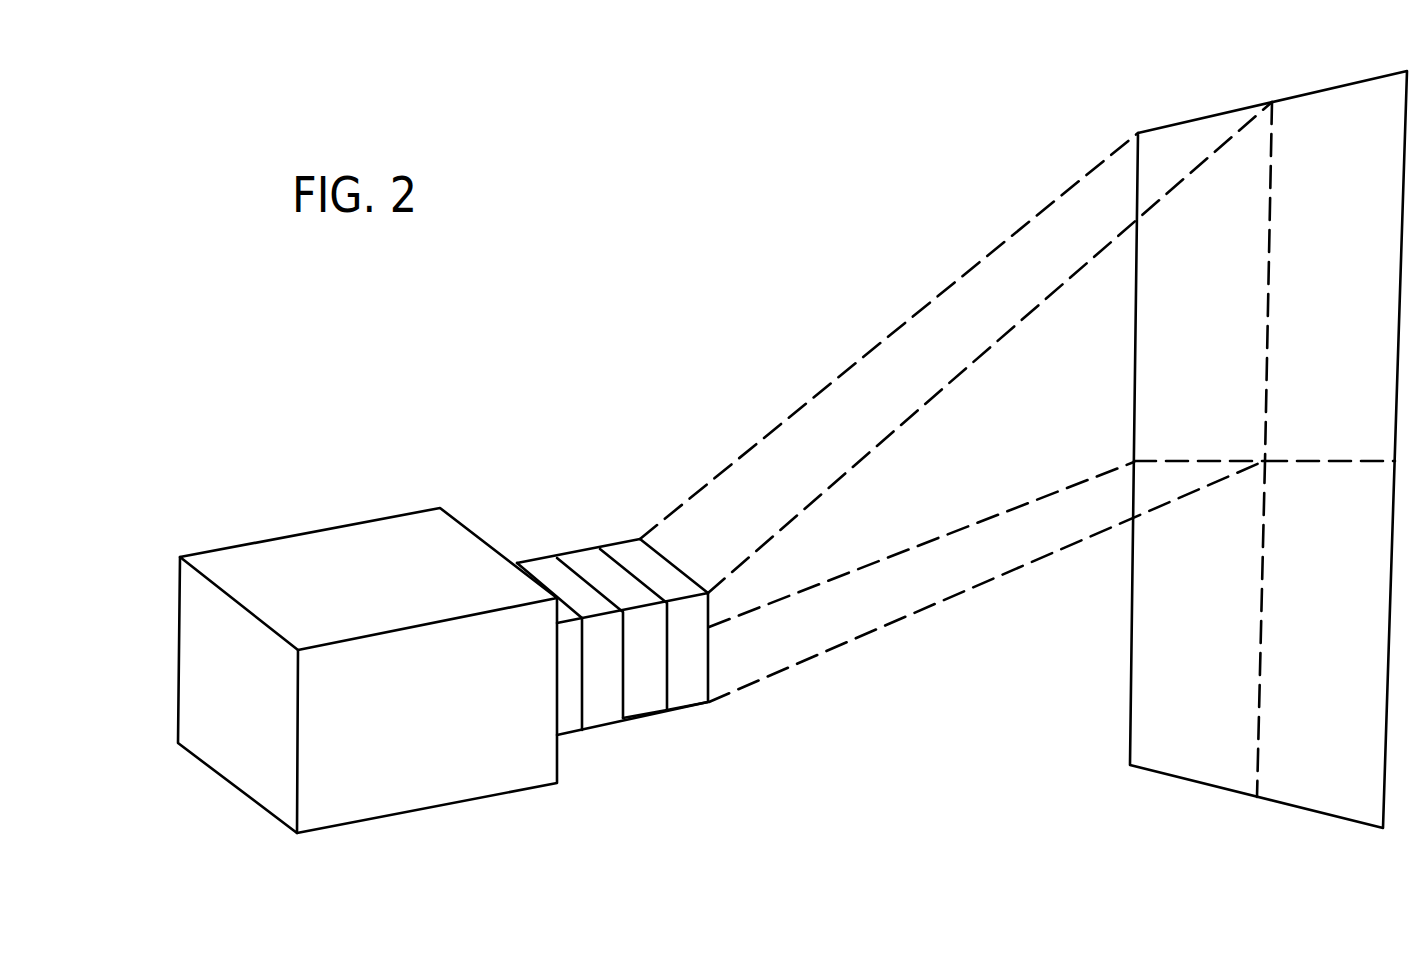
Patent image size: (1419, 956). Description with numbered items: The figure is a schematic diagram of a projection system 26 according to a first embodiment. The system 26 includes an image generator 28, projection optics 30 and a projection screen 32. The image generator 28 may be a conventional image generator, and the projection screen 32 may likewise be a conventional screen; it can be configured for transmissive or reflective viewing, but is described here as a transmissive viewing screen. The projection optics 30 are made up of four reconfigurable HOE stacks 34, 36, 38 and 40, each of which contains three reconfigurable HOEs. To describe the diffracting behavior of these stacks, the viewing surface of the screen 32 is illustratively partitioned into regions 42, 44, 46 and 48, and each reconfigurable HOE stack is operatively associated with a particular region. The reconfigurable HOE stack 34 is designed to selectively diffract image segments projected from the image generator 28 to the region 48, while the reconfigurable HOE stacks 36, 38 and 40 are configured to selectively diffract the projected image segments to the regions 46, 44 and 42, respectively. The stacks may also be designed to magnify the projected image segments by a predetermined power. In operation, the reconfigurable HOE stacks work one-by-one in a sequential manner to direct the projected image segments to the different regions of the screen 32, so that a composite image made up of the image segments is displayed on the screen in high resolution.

The system 26 is at (613, 326).
The image generator 28 is at (333, 538).
The projection optics 30 is at (643, 533).
The projection screen 32 is at (1345, 82).
The reconfigurable HOE stack 34 is at (570, 728).
The reconfigurable HOE stack 36 is at (603, 715).
The reconfigurable HOE stack 38 is at (643, 708).
The reconfigurable HOE stack 40 is at (687, 700).
The region 42 is at (1190, 315).
The region 44 is at (1328, 315).
The region 46 is at (1183, 637).
The region 48 is at (1310, 637).